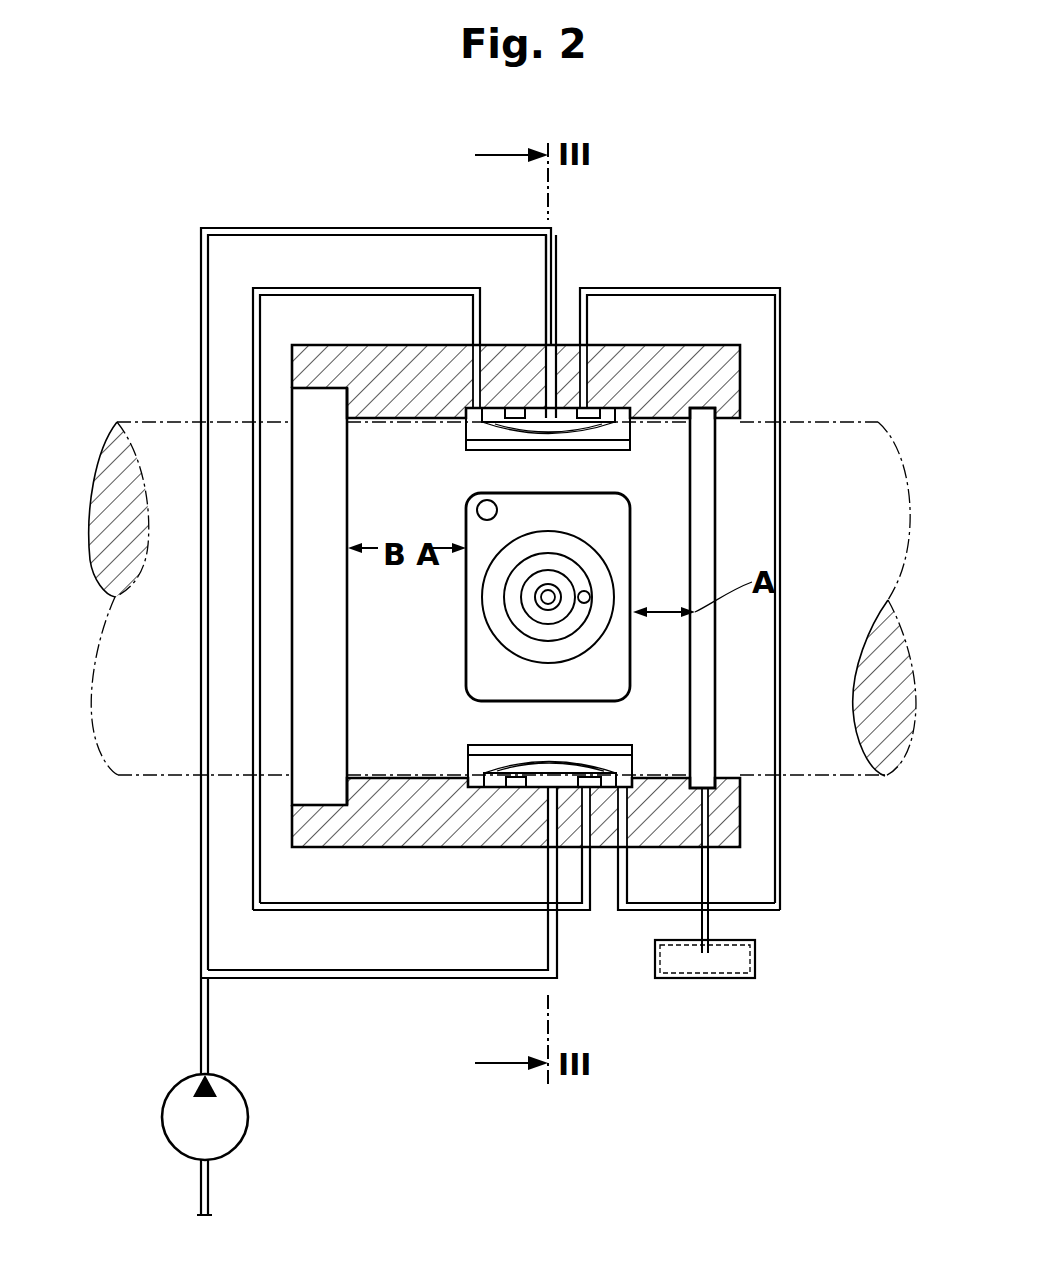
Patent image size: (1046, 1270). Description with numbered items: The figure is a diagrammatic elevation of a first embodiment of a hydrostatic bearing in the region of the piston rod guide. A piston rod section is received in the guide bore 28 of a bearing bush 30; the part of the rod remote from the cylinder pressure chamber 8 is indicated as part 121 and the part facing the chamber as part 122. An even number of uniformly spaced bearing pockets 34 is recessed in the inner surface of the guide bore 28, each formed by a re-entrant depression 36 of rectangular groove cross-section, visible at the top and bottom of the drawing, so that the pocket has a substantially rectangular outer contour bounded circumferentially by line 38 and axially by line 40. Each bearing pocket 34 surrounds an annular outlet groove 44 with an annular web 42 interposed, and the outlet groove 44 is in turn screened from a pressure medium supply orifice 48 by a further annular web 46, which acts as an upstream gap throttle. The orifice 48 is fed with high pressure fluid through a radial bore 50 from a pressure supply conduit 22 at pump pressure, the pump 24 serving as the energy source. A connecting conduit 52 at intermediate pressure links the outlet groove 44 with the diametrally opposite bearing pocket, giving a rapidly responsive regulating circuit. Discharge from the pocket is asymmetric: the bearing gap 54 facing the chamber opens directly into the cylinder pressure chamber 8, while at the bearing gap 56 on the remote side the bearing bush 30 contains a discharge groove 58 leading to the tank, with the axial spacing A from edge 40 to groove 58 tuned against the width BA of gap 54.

The cylinder pressure chamber 8 is at (318, 405).
The part of the piston rod section remote from the cylinder pressure chamber 121 is at (878, 424).
The part of the piston rod section facing the cylinder pressure chamber 122 is at (139, 776).
The pressure supply conduit 22 is at (340, 228).
The pump 24 is at (232, 1122).
The guide bore 28 is at (362, 421).
The bearing bush 30 is at (680, 365).
The bearing pocket 34 is at (626, 760).
The re-entrant depression 36 is at (621, 408).
The circumferential bounding line 38 is at (512, 492).
The axial bounding line 40 is at (466, 665).
The annular web 42 is at (596, 565).
The annular outlet groove 44 is at (512, 408).
The annular web 46 is at (553, 592).
The pressure medium supply orifice 48 is at (534, 408).
The radial bore 50 is at (568, 408).
The connecting conduit 52 is at (781, 309).
The bearing gap 54 is at (423, 430).
The bearing gap 56 is at (668, 435).
The discharge groove 58 is at (703, 421).